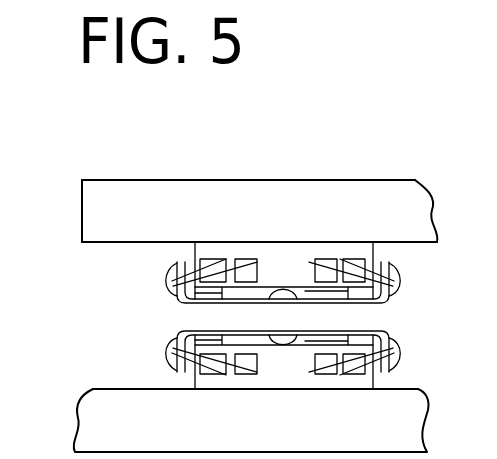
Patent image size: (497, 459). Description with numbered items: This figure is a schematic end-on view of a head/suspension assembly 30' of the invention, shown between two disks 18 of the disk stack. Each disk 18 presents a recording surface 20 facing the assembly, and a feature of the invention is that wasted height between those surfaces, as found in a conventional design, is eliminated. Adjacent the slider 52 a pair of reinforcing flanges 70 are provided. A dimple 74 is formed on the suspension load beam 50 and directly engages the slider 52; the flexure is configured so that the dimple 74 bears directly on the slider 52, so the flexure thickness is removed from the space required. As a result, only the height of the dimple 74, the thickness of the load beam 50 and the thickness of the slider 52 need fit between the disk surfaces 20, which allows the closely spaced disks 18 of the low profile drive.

The disk 18 is at (95, 208).
The recording surface 20 is at (118, 180).
The head/suspension assembly 30' is at (234, 315).
The suspension load beam 50 is at (212, 304).
The slider 52 is at (272, 258).
The reinforcing flanges 70 is at (170, 274).
The dimple 74 is at (293, 293).